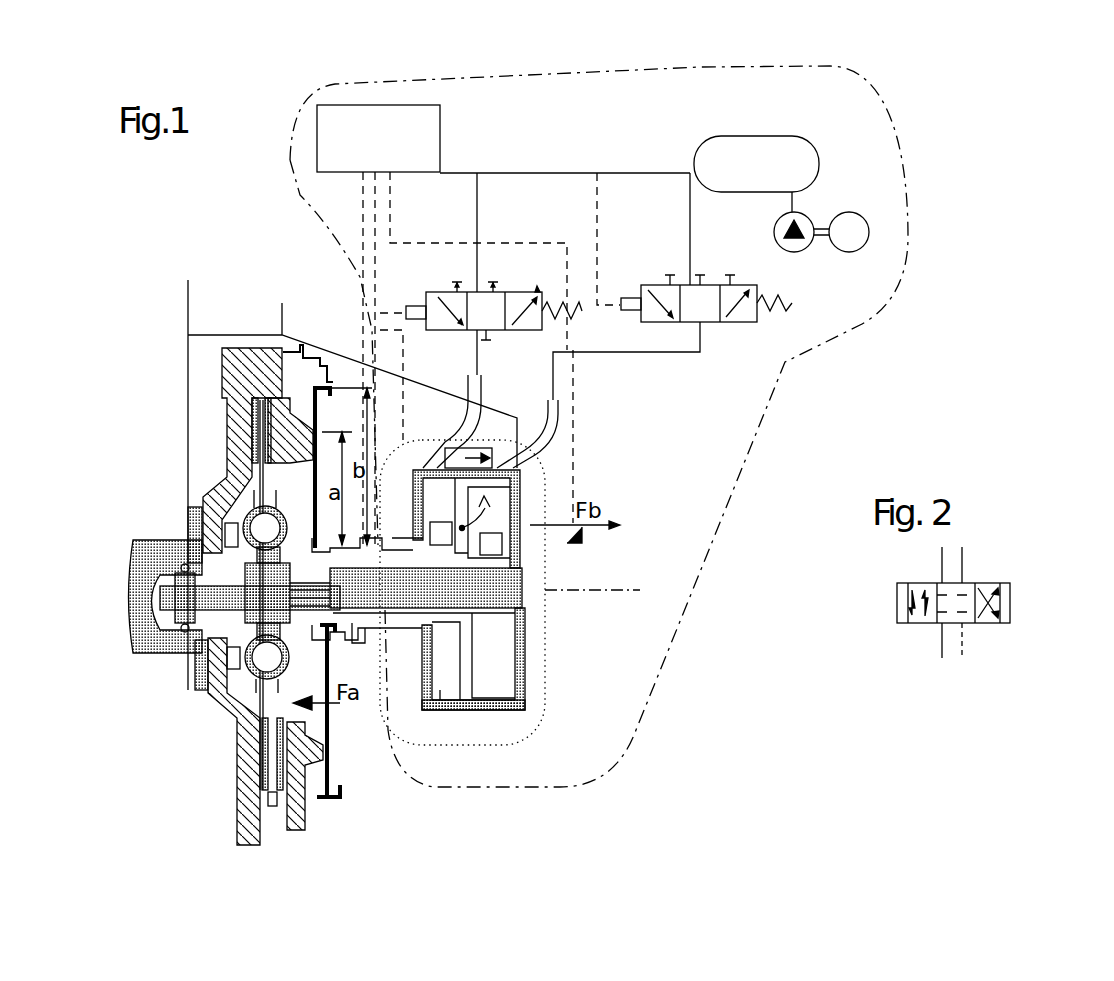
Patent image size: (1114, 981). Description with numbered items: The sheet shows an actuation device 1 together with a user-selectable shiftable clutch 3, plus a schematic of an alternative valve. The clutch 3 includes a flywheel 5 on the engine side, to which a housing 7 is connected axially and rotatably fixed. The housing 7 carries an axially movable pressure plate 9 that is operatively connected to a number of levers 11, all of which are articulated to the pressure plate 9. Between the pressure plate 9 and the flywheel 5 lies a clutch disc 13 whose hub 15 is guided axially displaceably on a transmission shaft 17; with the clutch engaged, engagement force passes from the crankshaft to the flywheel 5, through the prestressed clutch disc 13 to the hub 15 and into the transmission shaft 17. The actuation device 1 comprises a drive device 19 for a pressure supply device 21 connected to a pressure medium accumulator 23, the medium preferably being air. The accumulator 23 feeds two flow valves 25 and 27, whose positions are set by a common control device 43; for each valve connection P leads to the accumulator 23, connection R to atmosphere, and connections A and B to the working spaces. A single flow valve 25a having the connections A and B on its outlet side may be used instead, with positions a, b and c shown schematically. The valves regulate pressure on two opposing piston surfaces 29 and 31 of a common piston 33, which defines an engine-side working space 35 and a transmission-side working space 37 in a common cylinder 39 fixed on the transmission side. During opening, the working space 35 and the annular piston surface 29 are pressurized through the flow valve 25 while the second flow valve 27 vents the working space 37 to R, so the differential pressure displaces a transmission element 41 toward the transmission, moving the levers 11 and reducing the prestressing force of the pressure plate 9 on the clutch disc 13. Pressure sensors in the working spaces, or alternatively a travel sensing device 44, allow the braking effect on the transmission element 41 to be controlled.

In FIG. 1, the actuation device 1 is at (900, 148).
In FIG. 1, the shiftable clutch 3 is at (158, 757).
In FIG. 1, the flywheel 5 is at (237, 372).
In FIG. 1, the housing 7 is at (305, 355).
In FIG. 1, the pressure plate 9 is at (262, 372).
In FIG. 1, the levers 11 is at (325, 762).
In FIG. 1, the clutch disc 13 is at (250, 475).
In FIG. 1, the hub 15 is at (162, 592).
In FIG. 1, the transmission shaft 17 is at (540, 572).
In FIG. 1, the drive device 19 is at (869, 225).
In FIG. 1, the pressure supply device 21 is at (797, 253).
In FIG. 1, the pressure medium accumulator 23 is at (820, 120).
In FIG. 1, the flow valve 25 is at (487, 256).
In FIG. 1, the second flow valve 27 is at (745, 333).
In FIG. 1, the piston surface 29 is at (447, 700).
In FIG. 1, the piston surface 31 is at (540, 478).
In FIG. 1, the piston 33 is at (540, 623).
In FIG. 1, the engine-side working space 35 is at (442, 690).
In FIG. 1, the transmission-side working space 37 is at (540, 498).
In FIG. 1, the cylinder 39 is at (540, 686).
In FIG. 1, the transmission element 41 is at (353, 633).
In FIG. 1, the control device 43 is at (440, 138).
In FIG. 1, the travel sensing device 44 is at (483, 443).
In FIG. 2, the single flow valve 25a is at (1003, 632).